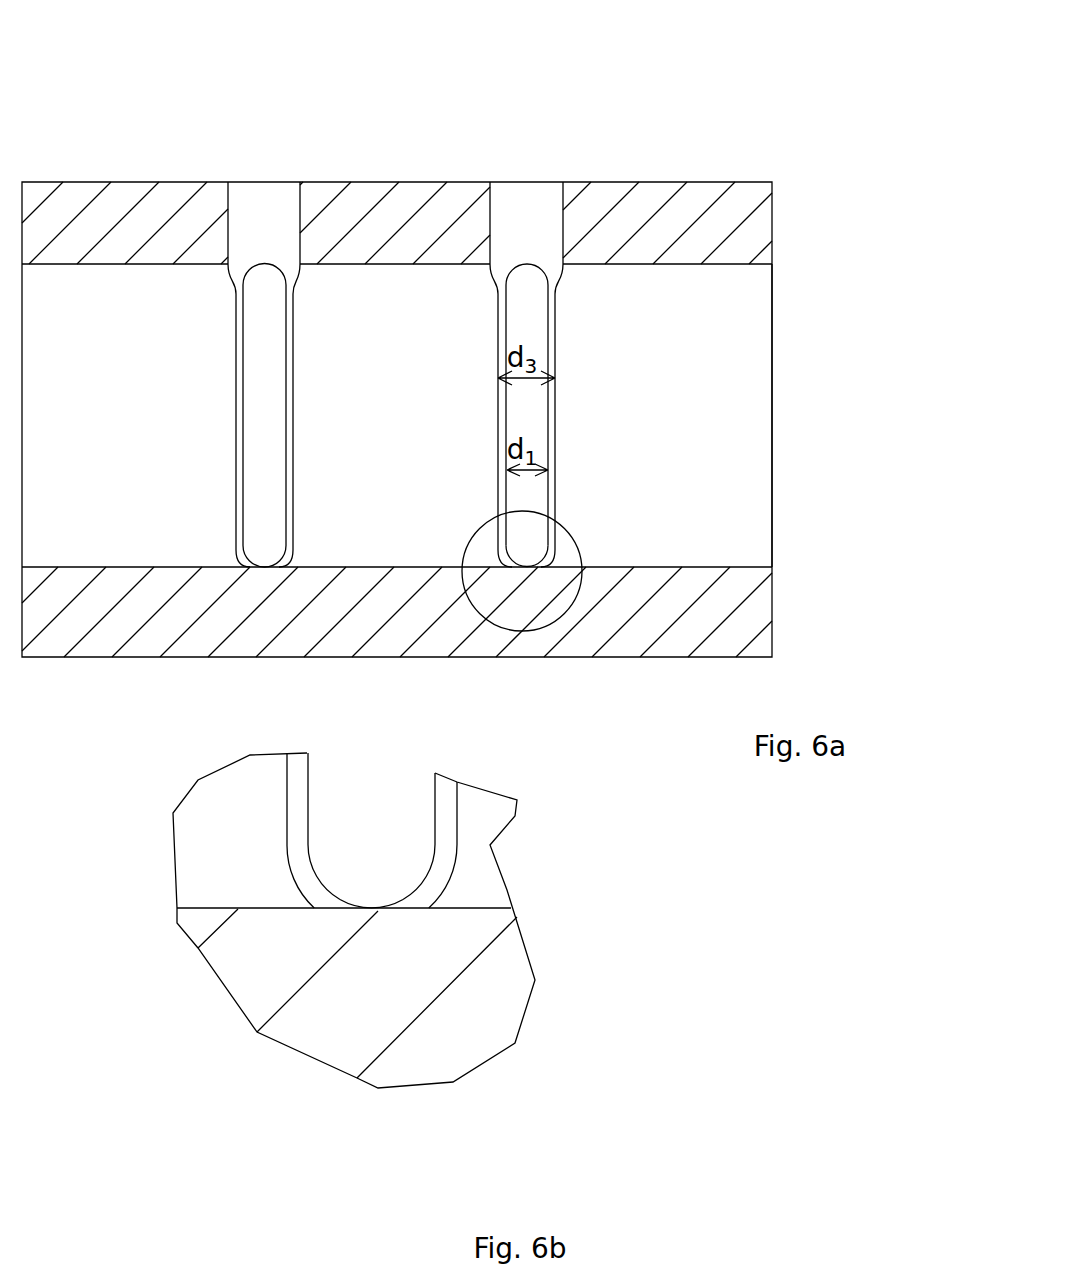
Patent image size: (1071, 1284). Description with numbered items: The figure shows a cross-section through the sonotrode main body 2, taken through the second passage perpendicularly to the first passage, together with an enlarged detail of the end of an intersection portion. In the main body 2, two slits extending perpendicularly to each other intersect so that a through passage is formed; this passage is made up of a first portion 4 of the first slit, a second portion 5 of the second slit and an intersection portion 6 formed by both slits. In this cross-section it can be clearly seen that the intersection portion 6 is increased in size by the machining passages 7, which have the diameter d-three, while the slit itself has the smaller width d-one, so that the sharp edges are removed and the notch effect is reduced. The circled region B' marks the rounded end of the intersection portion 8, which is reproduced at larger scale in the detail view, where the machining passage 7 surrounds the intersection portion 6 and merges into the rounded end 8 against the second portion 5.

In FIG. 6A, the sonotrode main body 2 is at (664, 161).
In FIG. 6A, the first portion 4 is at (530, 322).
In FIG. 6A, the second portion 5 is at (735, 477).
In FIG. 6B, the second portion 5 is at (485, 892).
In FIG. 6B, the intersection portion 6 is at (343, 832).
In FIG. 6A, the machining passage 7 is at (522, 232).
In FIG. 6B, the machining passage 7 is at (447, 848).
In FIG. 6A, the rounded end of the intersection portion 8 is at (527, 567).
In FIG. 6B, the rounded end of the intersection portion 8 is at (378, 909).
In FIG. 6A, the detail region B' is at (589, 614).
In FIG. 6B, the detail region B' is at (613, 810).